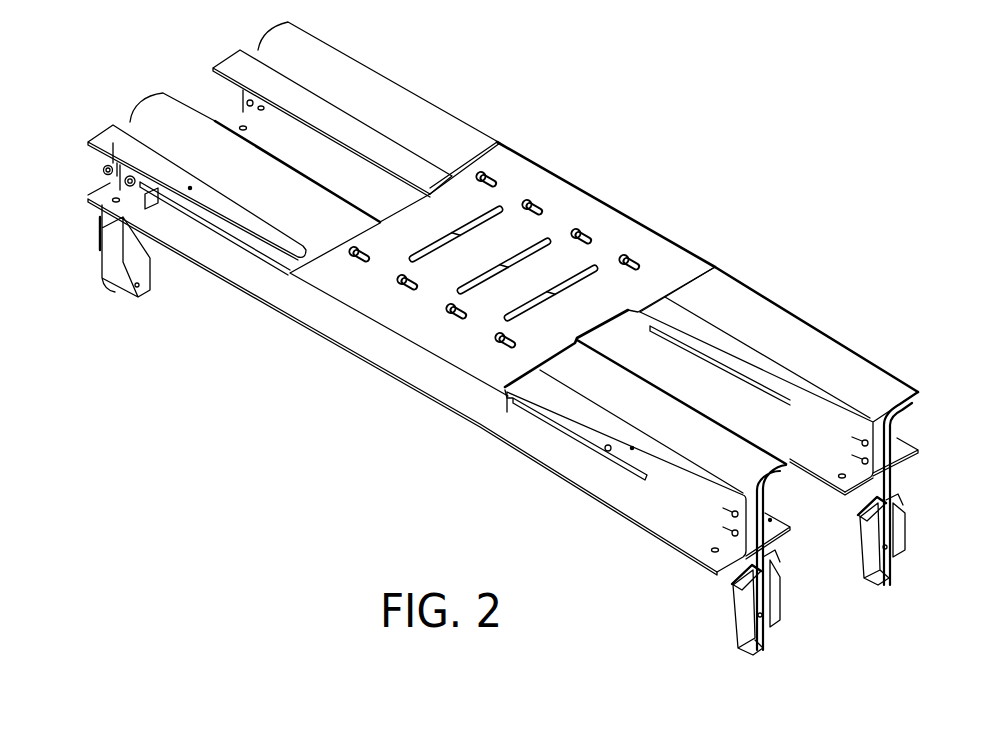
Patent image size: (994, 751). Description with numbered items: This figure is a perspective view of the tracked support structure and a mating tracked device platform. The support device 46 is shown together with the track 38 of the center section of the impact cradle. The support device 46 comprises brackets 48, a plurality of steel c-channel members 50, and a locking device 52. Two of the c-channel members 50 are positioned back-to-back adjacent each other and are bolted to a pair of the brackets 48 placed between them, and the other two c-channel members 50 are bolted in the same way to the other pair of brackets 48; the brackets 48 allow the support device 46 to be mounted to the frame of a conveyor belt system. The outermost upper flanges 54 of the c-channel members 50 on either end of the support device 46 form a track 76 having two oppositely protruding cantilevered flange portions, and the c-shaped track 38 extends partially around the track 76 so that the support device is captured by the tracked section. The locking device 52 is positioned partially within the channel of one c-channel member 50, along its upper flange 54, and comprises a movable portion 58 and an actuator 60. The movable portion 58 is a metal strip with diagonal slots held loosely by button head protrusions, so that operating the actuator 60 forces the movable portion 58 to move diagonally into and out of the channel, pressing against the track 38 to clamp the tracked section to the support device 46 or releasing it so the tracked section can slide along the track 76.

The track 38 is at (590, 212).
The support device 46 is at (380, 97).
The brackets 48 is at (110, 257).
The c-channel members 50 is at (162, 113).
The locking device 52 is at (235, 245).
The upper flange 54 is at (698, 489).
The movable portion 58 is at (517, 410).
The actuator 60 is at (112, 187).
The track 76 is at (843, 367).